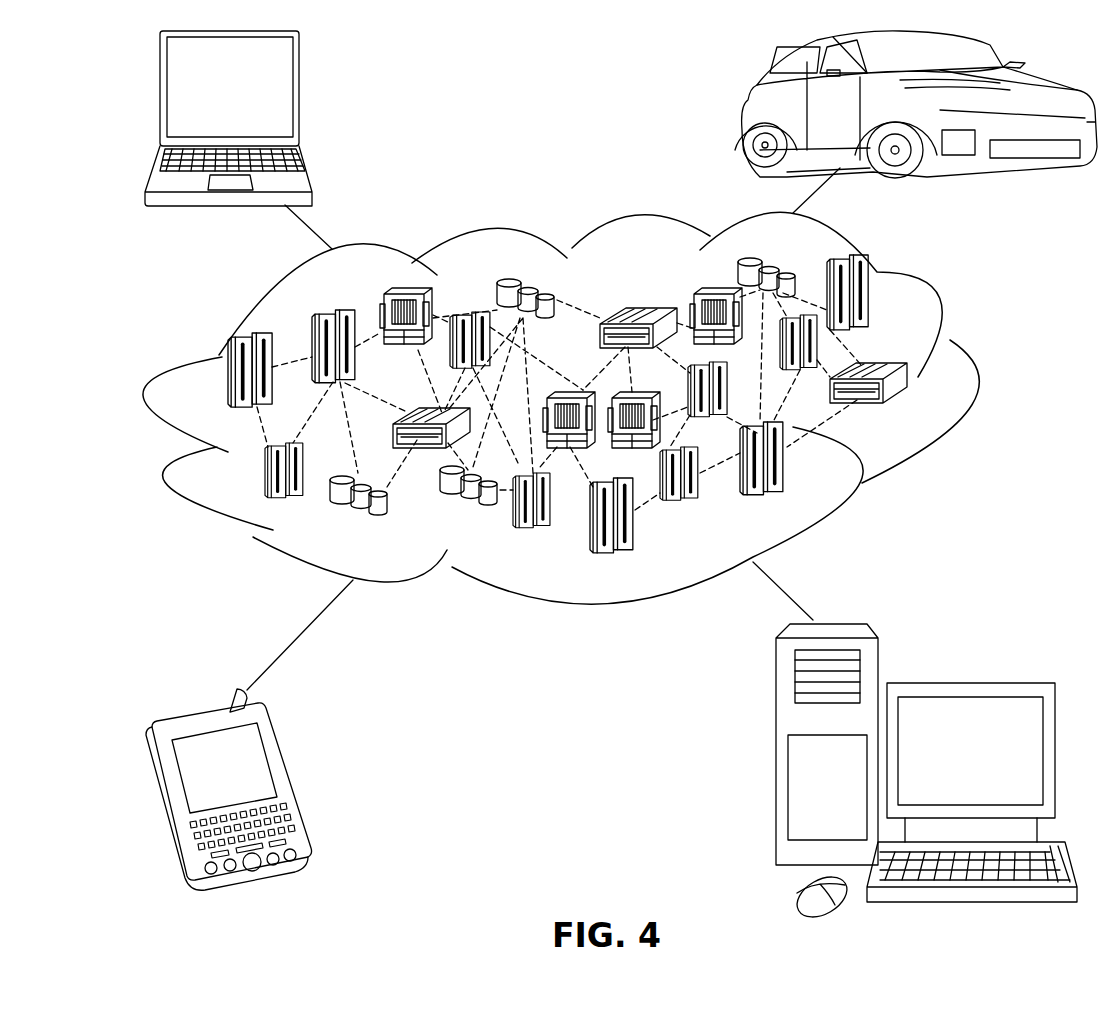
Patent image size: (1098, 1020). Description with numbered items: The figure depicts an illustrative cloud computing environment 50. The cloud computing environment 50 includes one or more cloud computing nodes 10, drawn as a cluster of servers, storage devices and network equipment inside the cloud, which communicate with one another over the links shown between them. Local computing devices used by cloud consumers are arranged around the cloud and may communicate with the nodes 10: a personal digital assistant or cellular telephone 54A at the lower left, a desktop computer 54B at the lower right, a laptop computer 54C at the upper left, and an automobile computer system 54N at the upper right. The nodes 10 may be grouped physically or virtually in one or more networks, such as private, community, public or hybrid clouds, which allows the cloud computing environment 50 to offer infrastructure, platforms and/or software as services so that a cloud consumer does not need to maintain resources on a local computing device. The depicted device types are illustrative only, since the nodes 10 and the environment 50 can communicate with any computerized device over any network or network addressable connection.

The cloud computing node 10 is at (912, 413).
The cloud computing environment 50 is at (968, 382).
The personal digital assistant or cellular telephone 54A is at (292, 782).
The desktop computer 54B is at (967, 683).
The laptop computer 54C is at (300, 95).
The automobile computer system 54N is at (742, 108).